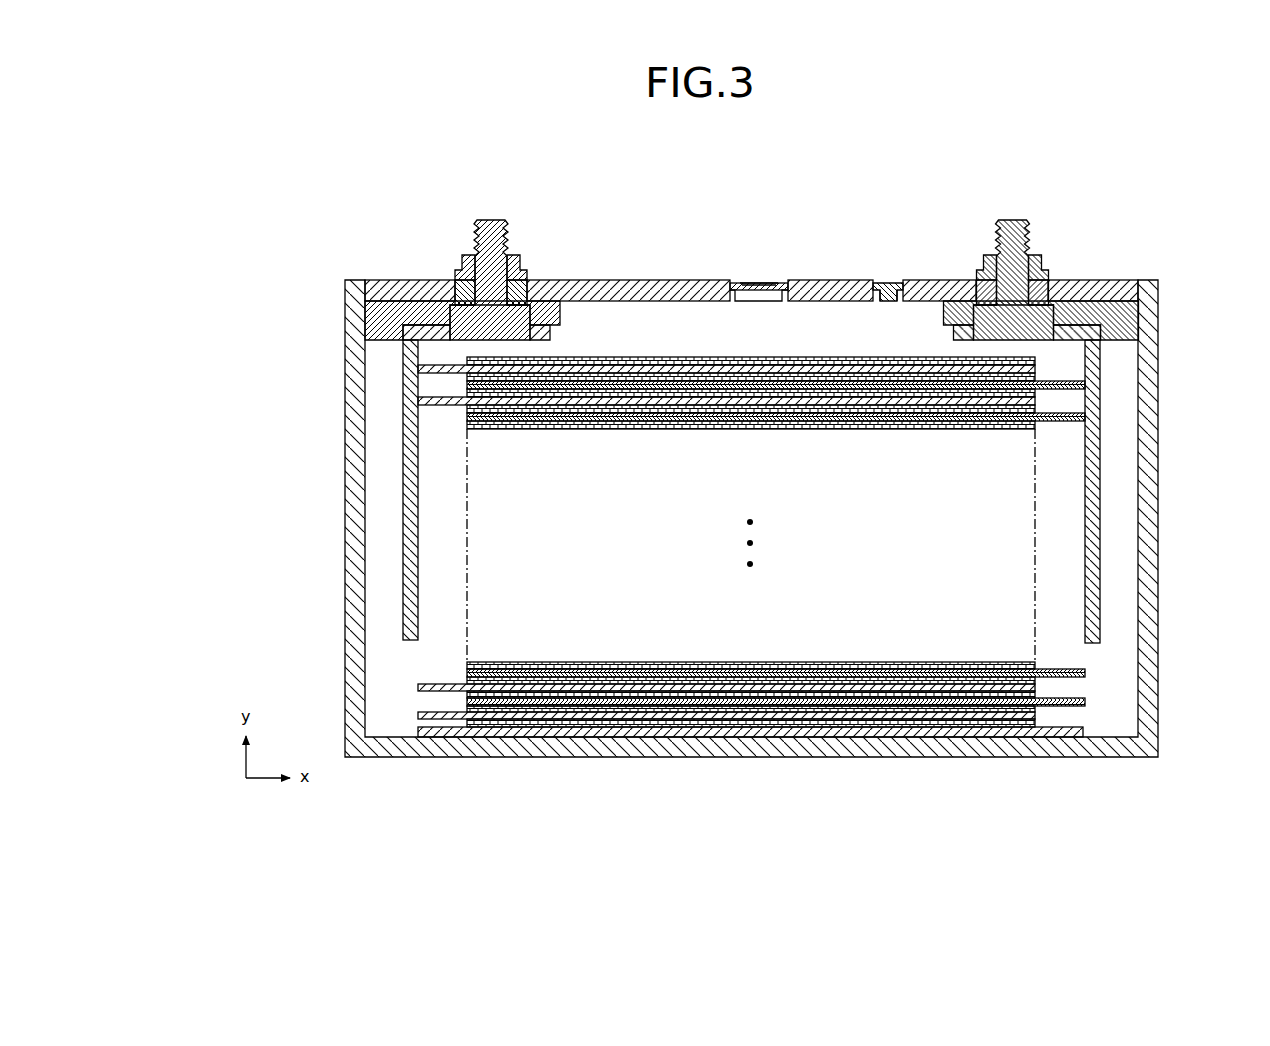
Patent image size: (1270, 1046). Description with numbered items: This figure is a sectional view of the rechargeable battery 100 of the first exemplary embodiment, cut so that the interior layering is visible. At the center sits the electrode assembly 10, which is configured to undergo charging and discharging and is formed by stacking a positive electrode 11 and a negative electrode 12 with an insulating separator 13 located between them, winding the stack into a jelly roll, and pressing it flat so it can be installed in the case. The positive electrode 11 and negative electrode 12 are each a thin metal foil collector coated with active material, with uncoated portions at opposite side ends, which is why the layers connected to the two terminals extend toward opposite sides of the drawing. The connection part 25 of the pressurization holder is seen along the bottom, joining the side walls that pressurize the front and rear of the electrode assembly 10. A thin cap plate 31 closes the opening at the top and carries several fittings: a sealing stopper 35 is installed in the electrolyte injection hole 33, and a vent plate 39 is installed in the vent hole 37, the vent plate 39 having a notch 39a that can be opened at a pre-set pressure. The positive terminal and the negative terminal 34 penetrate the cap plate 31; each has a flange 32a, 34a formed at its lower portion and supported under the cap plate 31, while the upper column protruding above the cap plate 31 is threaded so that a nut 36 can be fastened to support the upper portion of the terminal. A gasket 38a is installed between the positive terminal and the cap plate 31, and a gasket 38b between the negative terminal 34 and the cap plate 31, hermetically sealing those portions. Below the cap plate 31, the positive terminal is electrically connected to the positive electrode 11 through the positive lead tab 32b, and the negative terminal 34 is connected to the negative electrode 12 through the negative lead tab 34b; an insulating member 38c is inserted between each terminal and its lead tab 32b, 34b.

The rechargeable battery 100 is at (898, 188).
The electrode assembly 10 is at (689, 583).
The positive electrode 11 is at (553, 716).
The negative electrode 12 is at (628, 701).
The separator 13 is at (757, 693).
The connection part 25 is at (848, 742).
The cap plate 31 is at (840, 292).
The flange 32a is at (552, 331).
The positive lead tab 32b is at (408, 478).
The electrolyte injection hole 33 is at (885, 302).
The negative terminal 34 is at (490, 220).
The flange 34a is at (968, 333).
The negative lead tab 34b is at (1093, 524).
The sealing stopper 35 is at (887, 284).
The nut 36 is at (461, 262).
The vent hole 37 is at (757, 302).
The gasket 38a is at (458, 297).
The gasket 38b is at (990, 298).
The insulating member 38c is at (380, 322).
The vent plate 39 is at (768, 257).
The notch 39a is at (757, 283).